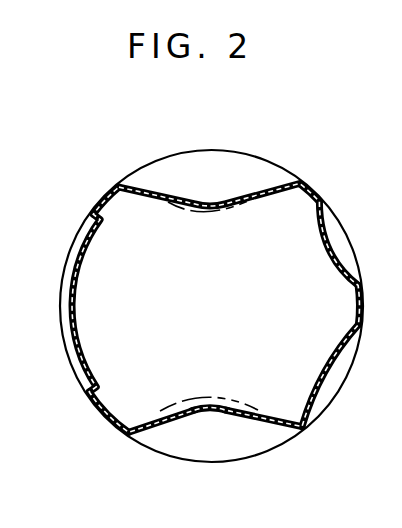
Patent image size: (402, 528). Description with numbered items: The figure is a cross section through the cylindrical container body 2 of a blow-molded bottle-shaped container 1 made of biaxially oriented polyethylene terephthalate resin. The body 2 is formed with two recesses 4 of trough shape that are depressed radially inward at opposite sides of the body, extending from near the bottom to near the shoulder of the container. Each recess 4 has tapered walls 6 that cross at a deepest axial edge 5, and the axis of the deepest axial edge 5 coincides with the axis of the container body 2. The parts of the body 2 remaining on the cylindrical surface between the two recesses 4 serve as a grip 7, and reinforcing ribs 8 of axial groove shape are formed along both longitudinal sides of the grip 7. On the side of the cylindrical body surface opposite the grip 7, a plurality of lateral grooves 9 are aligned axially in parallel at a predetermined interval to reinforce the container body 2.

The bottle-shaped container 1 is at (108, 422).
The cylindrical container body 2 is at (97, 365).
The recesses 4 is at (260, 425).
The deepest axial edge 5 is at (210, 412).
The tapered walls 6 is at (172, 425).
The grip 7 is at (364, 311).
The reinforcing ribs 8 is at (336, 252).
The lateral grooves 9 is at (62, 322).